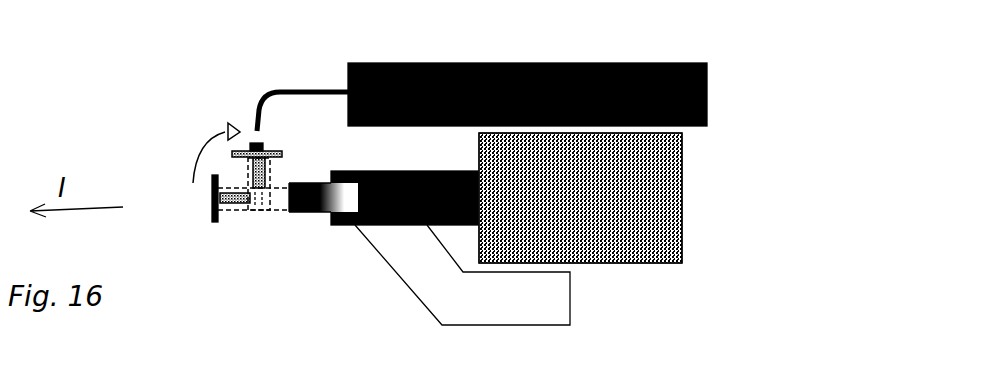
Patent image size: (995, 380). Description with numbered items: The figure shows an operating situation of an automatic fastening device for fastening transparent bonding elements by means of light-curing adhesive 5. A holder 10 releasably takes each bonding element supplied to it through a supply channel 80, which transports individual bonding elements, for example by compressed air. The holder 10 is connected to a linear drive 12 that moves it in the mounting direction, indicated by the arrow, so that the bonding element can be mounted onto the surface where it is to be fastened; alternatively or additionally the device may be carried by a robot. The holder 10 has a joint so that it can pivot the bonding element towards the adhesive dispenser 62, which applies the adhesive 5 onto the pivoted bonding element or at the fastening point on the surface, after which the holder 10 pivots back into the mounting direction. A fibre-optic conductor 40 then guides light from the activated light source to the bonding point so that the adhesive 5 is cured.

The light-curing adhesive 5 is at (253, 141).
The holder 10 is at (255, 211).
The linear drive 12 is at (653, 199).
The fibre-optic conductor 40 is at (317, 213).
The adhesive dispenser 62 is at (467, 62).
The supply channel 80 is at (573, 299).